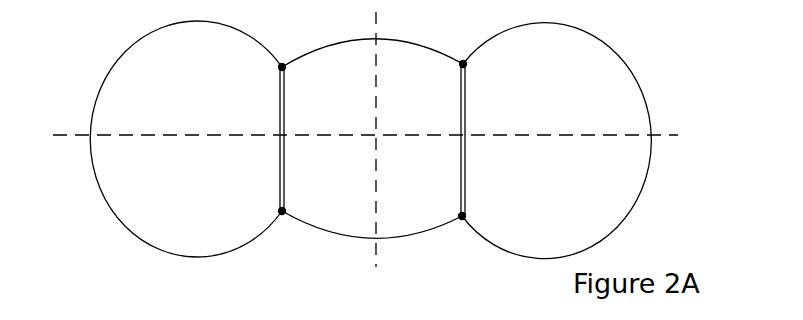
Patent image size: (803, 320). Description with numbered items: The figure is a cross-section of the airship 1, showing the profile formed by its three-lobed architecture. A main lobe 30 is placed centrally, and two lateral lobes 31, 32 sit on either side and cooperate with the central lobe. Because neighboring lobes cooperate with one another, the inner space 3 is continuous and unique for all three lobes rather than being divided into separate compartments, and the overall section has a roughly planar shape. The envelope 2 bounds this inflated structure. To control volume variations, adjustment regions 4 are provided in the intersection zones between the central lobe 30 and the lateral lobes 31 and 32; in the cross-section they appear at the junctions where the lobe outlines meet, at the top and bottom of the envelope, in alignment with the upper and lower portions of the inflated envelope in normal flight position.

The airship 1 is at (122, 247).
The second circular portion 2 is at (597, 38).
The inner space 3 is at (419, 134).
The adjustment regions 4 is at (284, 77).
The main lobe 30 is at (348, 225).
The lateral lobe 31 is at (628, 172).
The lateral lobe 32 is at (122, 77).